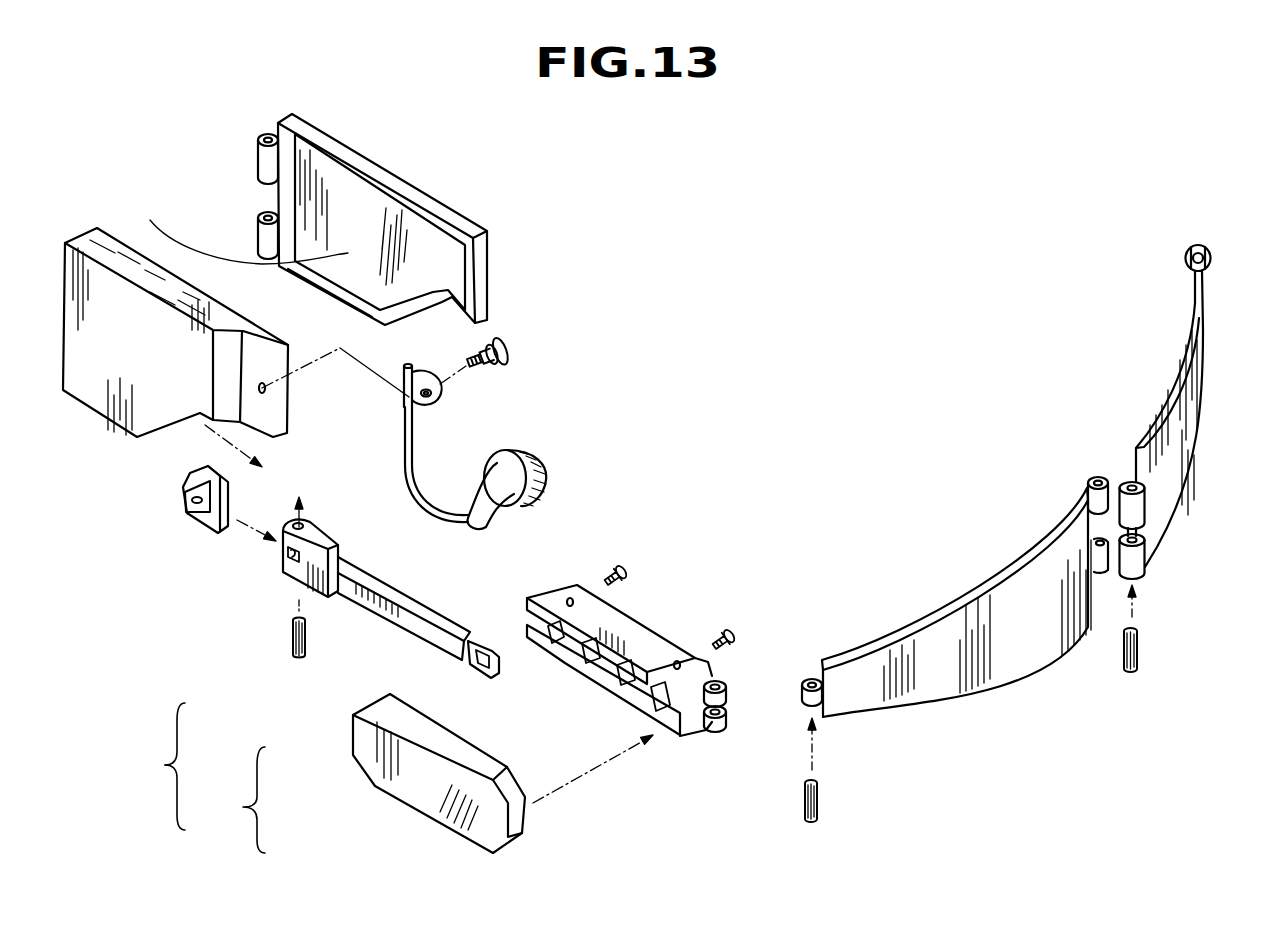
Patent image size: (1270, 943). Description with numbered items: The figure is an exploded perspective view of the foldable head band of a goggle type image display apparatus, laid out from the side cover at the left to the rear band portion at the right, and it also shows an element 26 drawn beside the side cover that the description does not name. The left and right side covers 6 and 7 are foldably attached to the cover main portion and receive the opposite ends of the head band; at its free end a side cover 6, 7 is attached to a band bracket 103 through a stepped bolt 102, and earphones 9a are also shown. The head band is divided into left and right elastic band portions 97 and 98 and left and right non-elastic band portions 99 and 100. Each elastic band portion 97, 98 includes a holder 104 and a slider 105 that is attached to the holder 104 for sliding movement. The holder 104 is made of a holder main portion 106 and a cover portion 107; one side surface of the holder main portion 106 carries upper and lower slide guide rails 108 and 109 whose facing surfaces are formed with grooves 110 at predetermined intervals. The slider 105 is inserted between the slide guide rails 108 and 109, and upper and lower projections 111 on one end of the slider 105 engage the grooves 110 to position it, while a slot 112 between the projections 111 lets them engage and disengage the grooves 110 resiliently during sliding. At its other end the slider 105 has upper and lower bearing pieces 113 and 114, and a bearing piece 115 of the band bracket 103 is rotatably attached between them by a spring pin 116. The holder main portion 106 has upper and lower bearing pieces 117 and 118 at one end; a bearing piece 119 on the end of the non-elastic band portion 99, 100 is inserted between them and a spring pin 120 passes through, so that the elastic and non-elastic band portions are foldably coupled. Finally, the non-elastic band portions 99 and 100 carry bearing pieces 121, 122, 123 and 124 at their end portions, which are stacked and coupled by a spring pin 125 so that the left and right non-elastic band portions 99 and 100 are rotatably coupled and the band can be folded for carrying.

The left side cover 6 is at (121, 312).
The right side cover 7 is at (233, 225).
The frame with hinge knuckles 26 is at (257, 152).
The stepped bolt 102 is at (506, 344).
The earphones 9a is at (547, 470).
The band bracket 103 is at (197, 482).
The bearing piece 115 is at (184, 513).
The left elastic band portion 97 is at (380, 675).
The right elastic band portion 98 is at (146, 797).
The slider 105 is at (339, 621).
The upper bearing piece 113 is at (284, 545).
The lower bearing piece 114 is at (283, 570).
The spring pin 116 is at (293, 642).
The slot 112 is at (469, 661).
The projections 111 is at (485, 644).
The holder 104 is at (416, 765).
The holder main portion 106 is at (563, 683).
The cover portion 107 is at (433, 802).
The lower slide guide rail 109 is at (683, 733).
The grooves 110 is at (650, 678).
The upper bearing piece 117 is at (728, 683).
The upper slide guide rail 108 is at (690, 720).
The lower bearing piece 118 is at (725, 722).
The bearing piece 119 is at (801, 692).
The spring pin 120 is at (818, 796).
The left non-elastic band portion 99 is at (990, 675).
The bearing piece 121 is at (1091, 478).
The bearing piece 122 is at (1113, 577).
The right non-elastic band portion 100 is at (1169, 477).
The bearing piece 123 is at (1130, 482).
The bearing piece 124 is at (1143, 575).
The spring pin 125 is at (1139, 648).